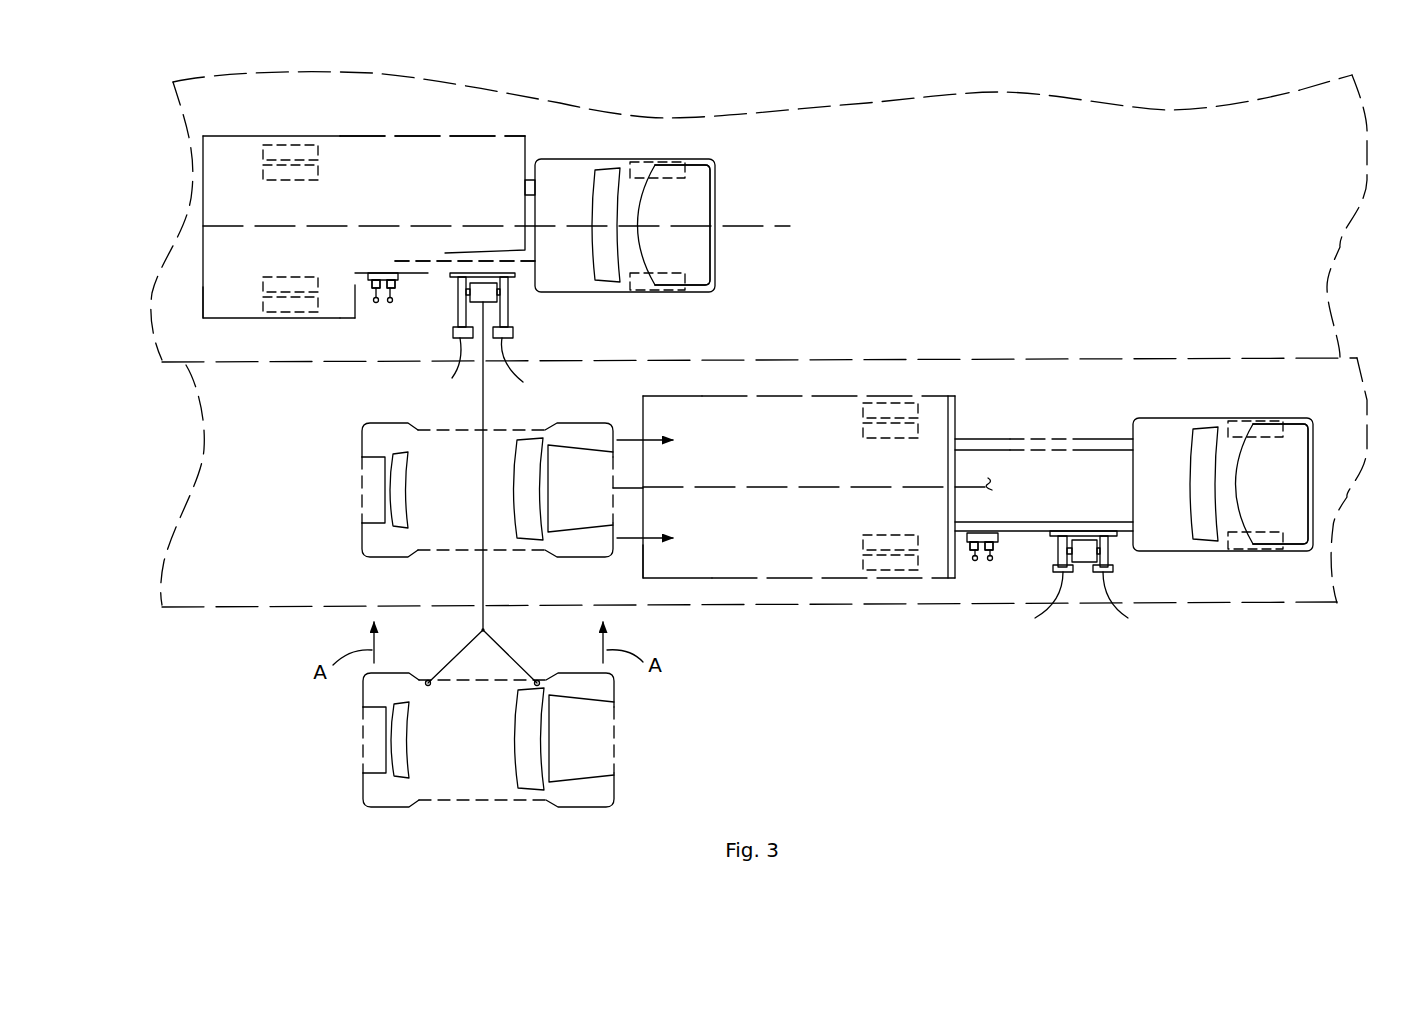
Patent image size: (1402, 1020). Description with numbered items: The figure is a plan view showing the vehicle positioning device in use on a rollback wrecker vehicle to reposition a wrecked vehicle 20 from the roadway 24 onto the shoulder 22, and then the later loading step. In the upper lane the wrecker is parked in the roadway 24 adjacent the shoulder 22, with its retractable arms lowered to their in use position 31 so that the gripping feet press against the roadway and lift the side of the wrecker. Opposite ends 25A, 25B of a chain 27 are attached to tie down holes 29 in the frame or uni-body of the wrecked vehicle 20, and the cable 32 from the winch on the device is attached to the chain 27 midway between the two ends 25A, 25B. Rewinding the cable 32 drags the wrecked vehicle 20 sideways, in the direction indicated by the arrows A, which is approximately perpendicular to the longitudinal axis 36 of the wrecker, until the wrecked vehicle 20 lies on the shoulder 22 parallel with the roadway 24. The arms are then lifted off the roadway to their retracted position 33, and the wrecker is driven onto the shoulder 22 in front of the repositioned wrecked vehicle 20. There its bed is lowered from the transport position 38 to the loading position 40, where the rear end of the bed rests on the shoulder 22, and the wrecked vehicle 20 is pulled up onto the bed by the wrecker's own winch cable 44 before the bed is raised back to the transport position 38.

The wrecked vehicle 20 is at (592, 423).
The shoulder 22 is at (149, 367).
The roadway 24 is at (149, 79).
The end of chain 25A is at (460, 650).
The end of chain 25B is at (520, 655).
The chain 27 is at (495, 637).
The tie down holes 29 is at (430, 685).
The in use position 31 is at (443, 345).
The cable 32 is at (485, 418).
The retracted position 33 is at (1072, 593).
The longitudinal axis 36 is at (753, 225).
The transport position 38 is at (393, 136).
The loading position 40 is at (903, 396).
The winch cable 44 is at (735, 487).